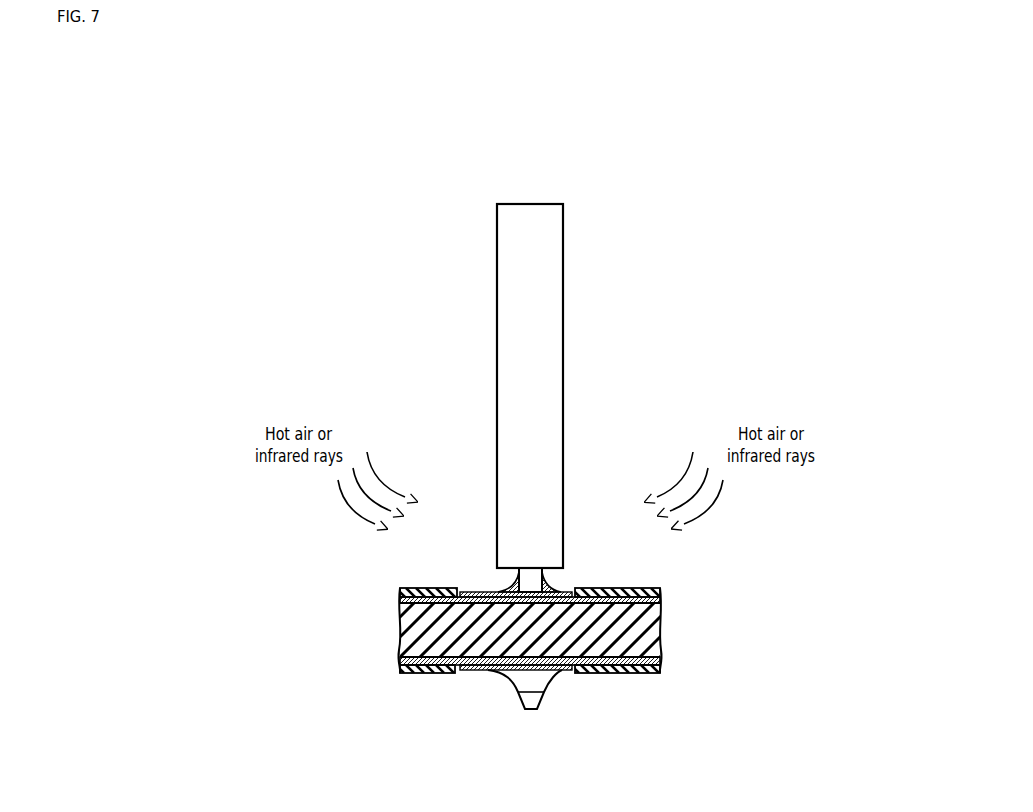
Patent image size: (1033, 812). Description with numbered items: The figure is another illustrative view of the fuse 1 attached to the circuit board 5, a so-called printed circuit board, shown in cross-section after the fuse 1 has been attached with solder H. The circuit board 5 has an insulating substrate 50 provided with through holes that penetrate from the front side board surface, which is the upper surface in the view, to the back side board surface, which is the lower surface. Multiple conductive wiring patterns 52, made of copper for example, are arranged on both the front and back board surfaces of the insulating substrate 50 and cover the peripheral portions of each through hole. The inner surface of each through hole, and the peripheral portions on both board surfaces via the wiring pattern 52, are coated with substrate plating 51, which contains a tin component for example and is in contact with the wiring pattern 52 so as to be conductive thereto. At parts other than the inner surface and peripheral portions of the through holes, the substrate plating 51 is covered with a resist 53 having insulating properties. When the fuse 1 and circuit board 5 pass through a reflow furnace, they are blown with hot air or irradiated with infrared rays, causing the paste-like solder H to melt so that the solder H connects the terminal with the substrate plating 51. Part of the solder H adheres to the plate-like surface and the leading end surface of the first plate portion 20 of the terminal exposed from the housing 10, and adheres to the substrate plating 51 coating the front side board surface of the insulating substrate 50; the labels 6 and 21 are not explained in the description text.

The mounting structure 6 is at (714, 123).
The fuse 1 is at (586, 194).
The housing 10 is at (563, 262).
The first plate portion 20 is at (528, 573).
The solder bump 21 is at (532, 700).
The solder H is at (508, 583).
The circuit board 5 is at (691, 696).
The insulating substrate 50 is at (618, 645).
The substrate plating 51 is at (468, 591).
The wiring pattern 52 is at (661, 599).
The resist 53 is at (428, 590).